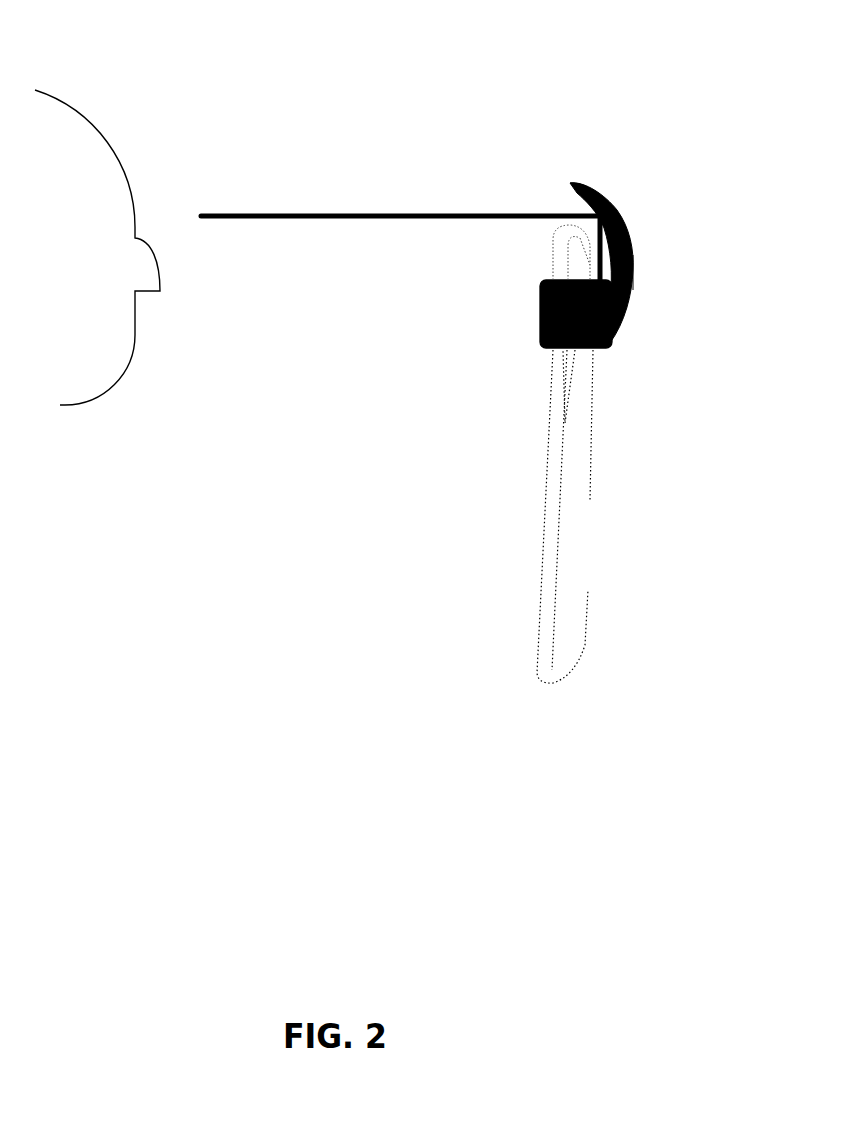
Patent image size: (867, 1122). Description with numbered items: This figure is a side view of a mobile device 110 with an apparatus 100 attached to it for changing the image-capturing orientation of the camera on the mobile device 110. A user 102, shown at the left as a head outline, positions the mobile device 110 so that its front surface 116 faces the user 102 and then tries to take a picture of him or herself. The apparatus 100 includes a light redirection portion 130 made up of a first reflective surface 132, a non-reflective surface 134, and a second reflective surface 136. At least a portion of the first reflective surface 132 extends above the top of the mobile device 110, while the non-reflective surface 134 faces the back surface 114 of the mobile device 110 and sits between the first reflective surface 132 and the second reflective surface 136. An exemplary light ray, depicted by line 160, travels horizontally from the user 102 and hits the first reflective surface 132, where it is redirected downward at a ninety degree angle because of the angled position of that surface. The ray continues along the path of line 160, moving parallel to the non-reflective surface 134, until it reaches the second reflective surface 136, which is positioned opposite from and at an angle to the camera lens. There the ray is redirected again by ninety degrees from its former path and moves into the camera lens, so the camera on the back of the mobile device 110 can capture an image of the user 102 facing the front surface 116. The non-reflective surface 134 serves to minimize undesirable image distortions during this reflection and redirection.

The apparatus 100 is at (697, 205).
The user 102 is at (82, 108).
The mobile device 110 is at (602, 516).
The back surface 114 is at (588, 588).
The front surface 116 is at (550, 453).
The light redirection portion 130 is at (623, 231).
The first reflective surface 132 is at (580, 195).
The non-reflective surface 134 is at (635, 272).
The second reflective surface 136 is at (630, 318).
The line 160 is at (371, 212).